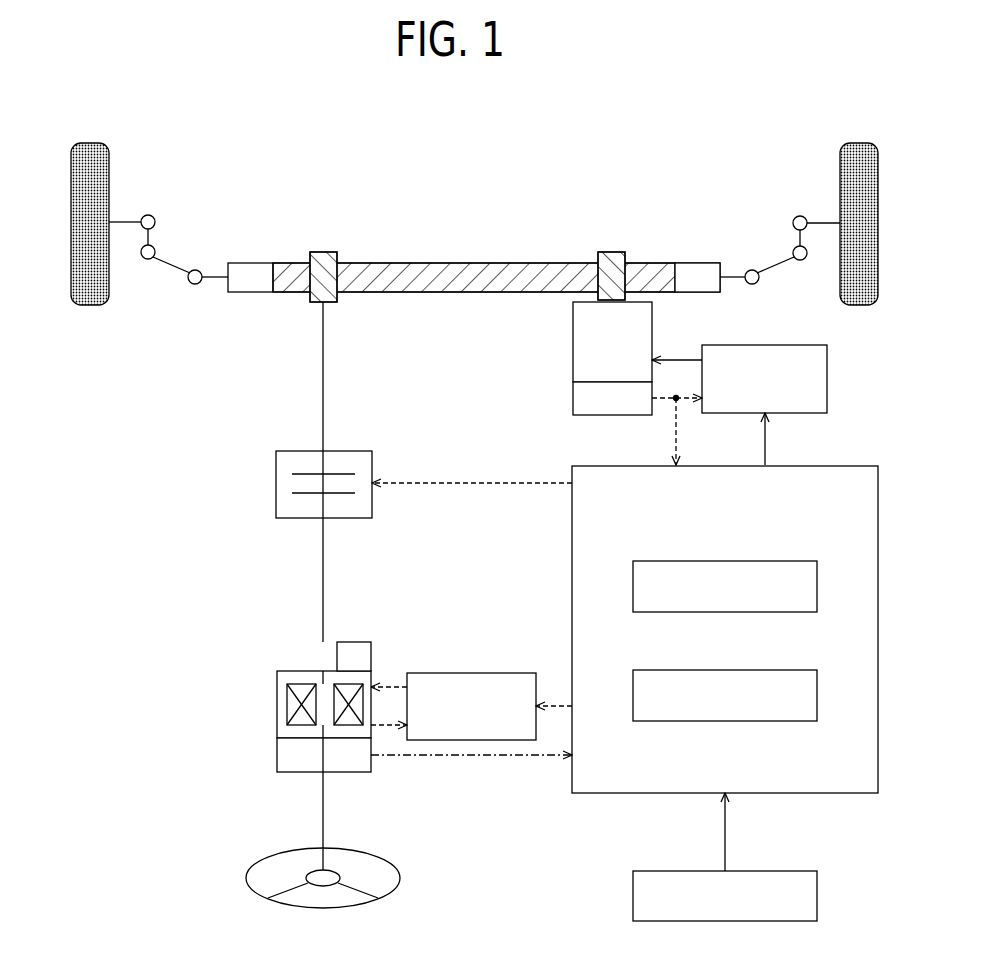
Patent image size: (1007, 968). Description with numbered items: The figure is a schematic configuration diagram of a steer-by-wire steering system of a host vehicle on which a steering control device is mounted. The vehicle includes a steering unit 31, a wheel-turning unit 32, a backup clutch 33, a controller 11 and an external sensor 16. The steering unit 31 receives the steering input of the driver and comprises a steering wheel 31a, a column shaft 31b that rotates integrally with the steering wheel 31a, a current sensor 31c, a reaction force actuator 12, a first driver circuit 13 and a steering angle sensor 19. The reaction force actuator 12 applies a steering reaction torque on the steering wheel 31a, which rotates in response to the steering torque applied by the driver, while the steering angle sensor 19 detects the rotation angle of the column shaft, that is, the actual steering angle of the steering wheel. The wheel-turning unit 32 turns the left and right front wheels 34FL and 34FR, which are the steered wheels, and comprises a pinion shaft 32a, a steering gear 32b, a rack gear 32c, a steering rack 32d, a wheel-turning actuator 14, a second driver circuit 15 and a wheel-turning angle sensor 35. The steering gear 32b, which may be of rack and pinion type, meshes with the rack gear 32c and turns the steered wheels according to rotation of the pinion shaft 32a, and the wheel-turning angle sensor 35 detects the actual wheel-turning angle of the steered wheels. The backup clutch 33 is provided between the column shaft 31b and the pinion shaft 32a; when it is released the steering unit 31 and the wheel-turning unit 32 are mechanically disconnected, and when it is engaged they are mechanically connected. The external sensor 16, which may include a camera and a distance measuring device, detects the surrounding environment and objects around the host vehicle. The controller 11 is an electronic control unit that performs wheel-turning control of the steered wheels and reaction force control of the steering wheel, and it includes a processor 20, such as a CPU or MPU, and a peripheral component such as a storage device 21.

The controller 11 is at (838, 465).
The reaction force actuator 12 is at (277, 697).
The first driver circuit 13 is at (500, 673).
The wheel-turning actuator 14 is at (573, 347).
The second driver circuit 15 is at (795, 345).
The external sensor 16 is at (793, 871).
The steering angle sensor 19 is at (298, 772).
The processor 20 is at (793, 561).
The storage device 21 is at (793, 670).
The steering unit 31 is at (272, 741).
The steering wheel 31a is at (290, 908).
The column shaft 31b is at (323, 812).
The current sensor 31c is at (352, 642).
The wheel-turning unit 32 is at (455, 246).
The pinion shaft 32a is at (323, 370).
The steering gear 32b is at (322, 251).
The rack gear 32c is at (565, 262).
The steering rack 32d is at (695, 262).
The backup clutch 33 is at (276, 484).
The left front wheel 34FL is at (90, 142).
The right front wheel 34FR is at (858, 142).
The wheel-turning angle sensor 35 is at (573, 398).